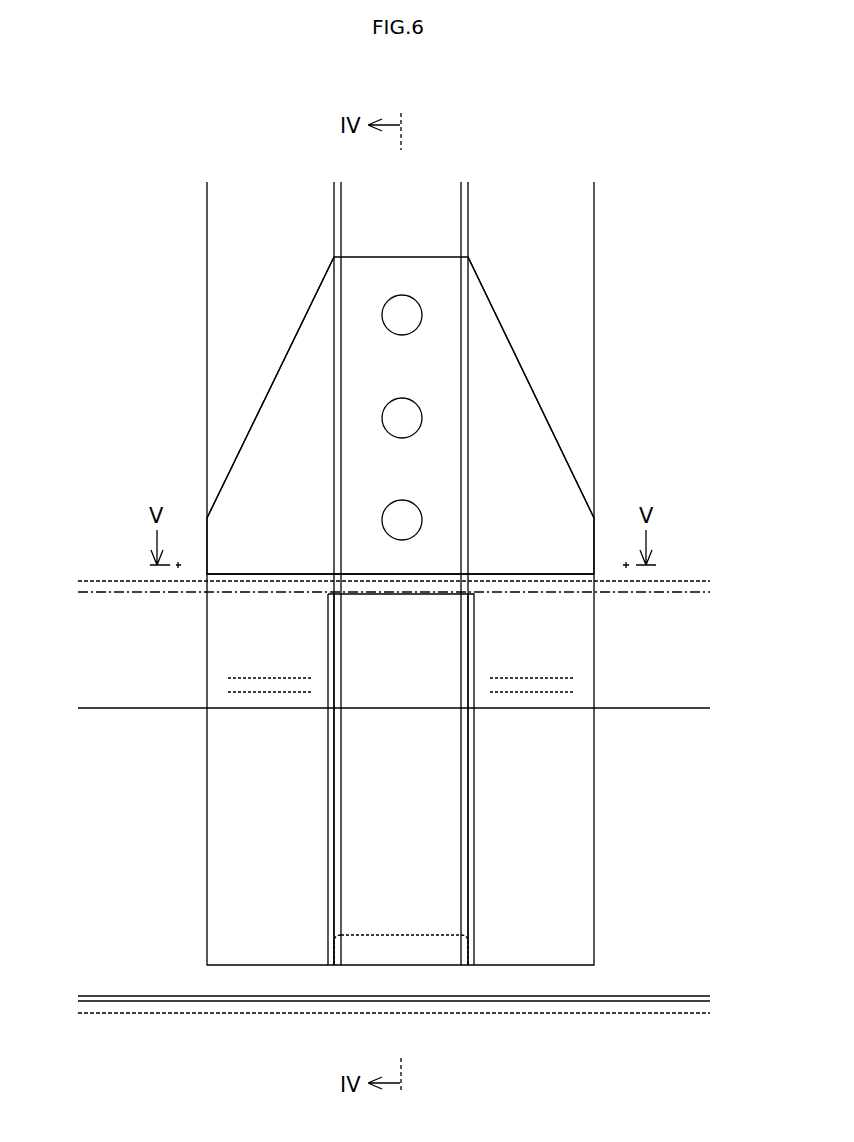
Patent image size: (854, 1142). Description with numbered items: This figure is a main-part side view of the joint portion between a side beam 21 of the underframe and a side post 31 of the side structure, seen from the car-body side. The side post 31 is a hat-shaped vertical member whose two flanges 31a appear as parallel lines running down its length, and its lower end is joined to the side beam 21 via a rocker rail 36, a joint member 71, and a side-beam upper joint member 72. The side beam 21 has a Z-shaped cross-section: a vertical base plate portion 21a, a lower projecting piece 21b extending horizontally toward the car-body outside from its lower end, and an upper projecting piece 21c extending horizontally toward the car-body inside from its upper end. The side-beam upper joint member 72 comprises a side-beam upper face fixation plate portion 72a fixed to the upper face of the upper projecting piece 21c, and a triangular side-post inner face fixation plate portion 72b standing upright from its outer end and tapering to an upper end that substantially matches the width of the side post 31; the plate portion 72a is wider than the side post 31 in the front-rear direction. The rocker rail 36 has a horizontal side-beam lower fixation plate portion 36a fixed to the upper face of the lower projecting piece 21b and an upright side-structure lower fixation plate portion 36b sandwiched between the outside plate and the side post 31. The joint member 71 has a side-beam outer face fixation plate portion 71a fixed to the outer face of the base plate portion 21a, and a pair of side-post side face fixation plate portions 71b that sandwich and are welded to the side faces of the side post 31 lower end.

The side post 31 is at (405, 573).
The flange 31a is at (218, 295).
The side-beam upper joint member 72 is at (426, 415).
The side-beam upper face fixation plate portion 72a is at (297, 574).
The side-post inner face fixation plate portion 72b is at (292, 350).
The side beam 21 is at (394, 1014).
The base plate portion 21a is at (185, 985).
The lower projecting piece 21b is at (478, 1013).
The upper projecting piece 21c is at (683, 580).
The rocker rail 36 is at (399, 614).
The side-beam lower fixation plate portion 36a is at (133, 996).
The side-structure lower fixation plate portion 36b is at (137, 712).
The joint member 71 is at (401, 779).
The side-beam outer face fixation plate portion 71a is at (470, 830).
The side-post side face fixation plate portion 71b is at (327, 782).